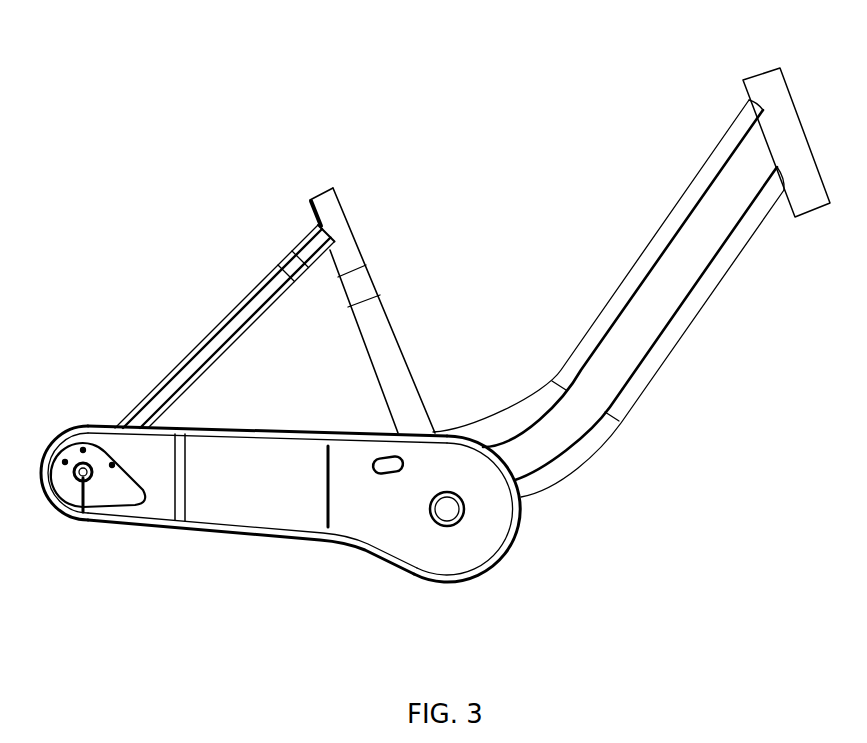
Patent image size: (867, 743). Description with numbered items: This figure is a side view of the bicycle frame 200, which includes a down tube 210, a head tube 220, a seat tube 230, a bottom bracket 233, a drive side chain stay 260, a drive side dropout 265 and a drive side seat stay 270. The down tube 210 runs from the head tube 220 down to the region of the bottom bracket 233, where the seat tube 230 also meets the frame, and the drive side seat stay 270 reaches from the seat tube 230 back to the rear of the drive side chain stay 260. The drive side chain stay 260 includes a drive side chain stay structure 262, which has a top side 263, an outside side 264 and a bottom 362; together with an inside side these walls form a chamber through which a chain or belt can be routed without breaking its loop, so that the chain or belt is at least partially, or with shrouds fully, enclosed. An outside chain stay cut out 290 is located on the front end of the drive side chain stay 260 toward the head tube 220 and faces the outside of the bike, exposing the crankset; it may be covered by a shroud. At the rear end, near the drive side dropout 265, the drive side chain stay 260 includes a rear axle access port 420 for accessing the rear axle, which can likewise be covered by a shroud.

The bicycle frame 200 is at (500, 112).
The down tube 210 is at (628, 335).
The head tube 220 is at (807, 187).
The seat tube 230 is at (378, 327).
The bottom bracket 233 is at (450, 515).
The drive side chain stay 260 is at (300, 507).
The drive side chain stay structure 262 is at (230, 570).
The top side 263 is at (237, 428).
The outside side 264 is at (250, 493).
The drive side dropout 265 is at (80, 513).
The drive side seat stay 270 is at (213, 347).
The outside chain stay cut out 290 is at (488, 607).
The bottom 362 is at (305, 540).
The rear axle access port 420 is at (120, 487).